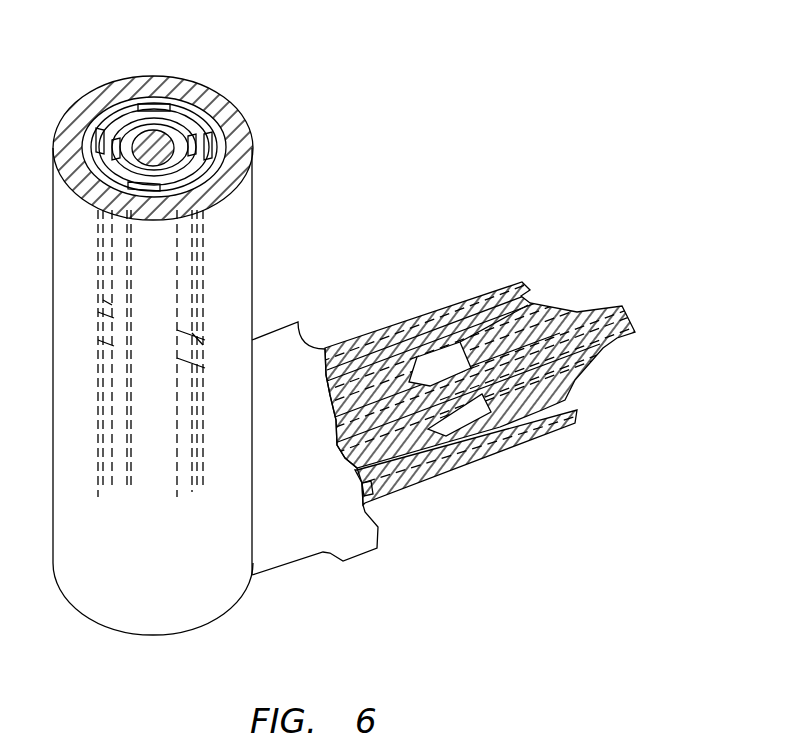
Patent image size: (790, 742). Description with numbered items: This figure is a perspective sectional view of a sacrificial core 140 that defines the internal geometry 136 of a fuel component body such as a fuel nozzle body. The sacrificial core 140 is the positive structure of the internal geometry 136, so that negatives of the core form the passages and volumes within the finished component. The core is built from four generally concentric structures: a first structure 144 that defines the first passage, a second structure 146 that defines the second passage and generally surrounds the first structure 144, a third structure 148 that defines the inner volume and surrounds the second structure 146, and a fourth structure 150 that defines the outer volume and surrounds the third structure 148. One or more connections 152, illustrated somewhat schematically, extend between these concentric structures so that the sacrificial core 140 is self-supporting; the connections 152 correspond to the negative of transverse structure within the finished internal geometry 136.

The internal geometry 136 is at (326, 210).
The sacrificial core 140 is at (423, 268).
The first structure 144 is at (157, 143).
The second structure 146 is at (142, 118).
The third structure 148 is at (210, 110).
The fourth structure 150 is at (250, 122).
The connections 152 is at (207, 333).